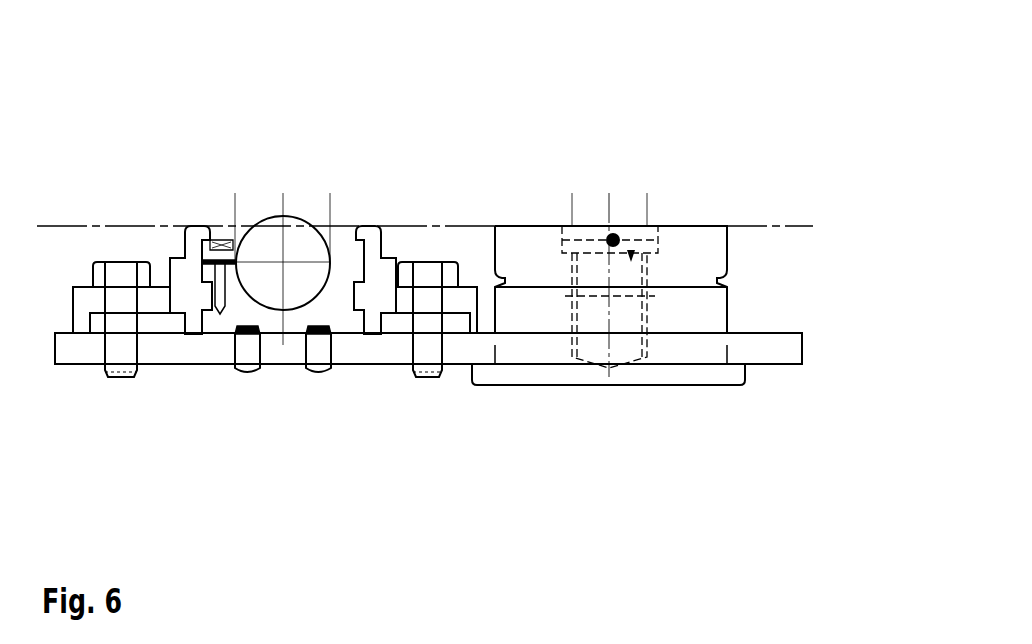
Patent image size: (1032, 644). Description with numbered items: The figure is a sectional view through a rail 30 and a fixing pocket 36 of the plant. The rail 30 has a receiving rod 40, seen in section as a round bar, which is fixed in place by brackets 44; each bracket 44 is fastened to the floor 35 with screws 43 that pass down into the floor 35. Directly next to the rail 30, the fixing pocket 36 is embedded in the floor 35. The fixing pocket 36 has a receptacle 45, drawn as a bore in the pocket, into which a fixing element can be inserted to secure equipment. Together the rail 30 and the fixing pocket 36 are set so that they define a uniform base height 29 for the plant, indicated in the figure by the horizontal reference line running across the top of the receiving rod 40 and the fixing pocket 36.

The uniform base height 29 is at (390, 225).
The rail 30 is at (272, 137).
The floor 35 is at (463, 353).
The fixing pocket 36 is at (677, 262).
The receiving rod 40 is at (350, 253).
The screw 43 is at (122, 303).
The bracket 44 is at (177, 305).
The receptacle 45 is at (631, 252).